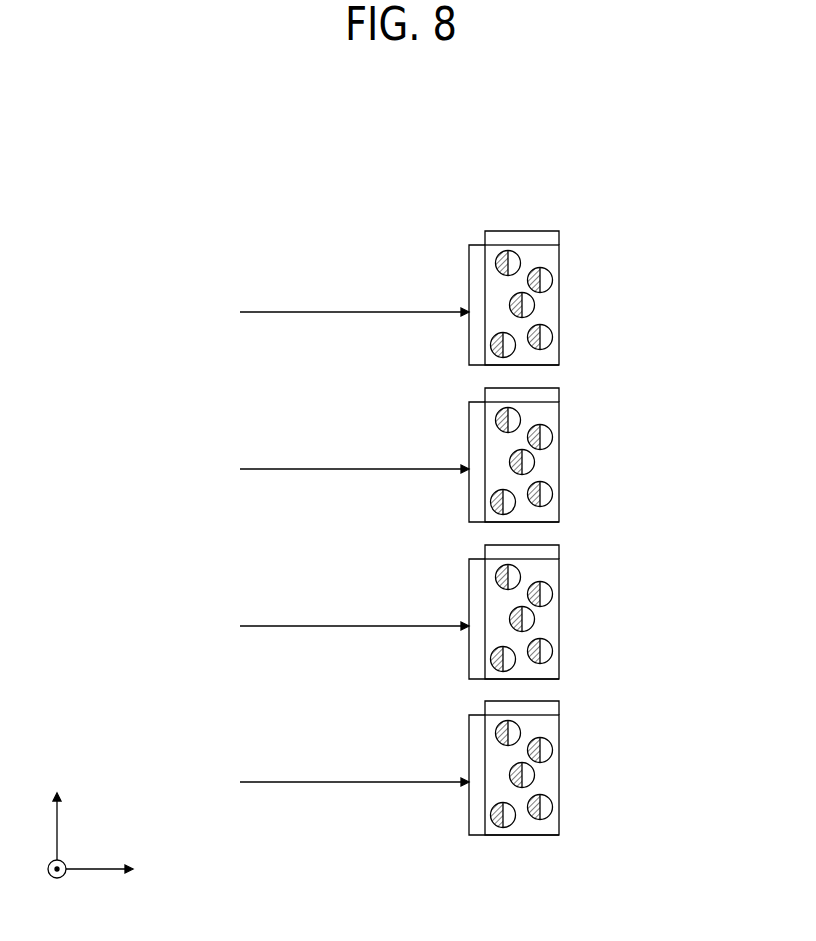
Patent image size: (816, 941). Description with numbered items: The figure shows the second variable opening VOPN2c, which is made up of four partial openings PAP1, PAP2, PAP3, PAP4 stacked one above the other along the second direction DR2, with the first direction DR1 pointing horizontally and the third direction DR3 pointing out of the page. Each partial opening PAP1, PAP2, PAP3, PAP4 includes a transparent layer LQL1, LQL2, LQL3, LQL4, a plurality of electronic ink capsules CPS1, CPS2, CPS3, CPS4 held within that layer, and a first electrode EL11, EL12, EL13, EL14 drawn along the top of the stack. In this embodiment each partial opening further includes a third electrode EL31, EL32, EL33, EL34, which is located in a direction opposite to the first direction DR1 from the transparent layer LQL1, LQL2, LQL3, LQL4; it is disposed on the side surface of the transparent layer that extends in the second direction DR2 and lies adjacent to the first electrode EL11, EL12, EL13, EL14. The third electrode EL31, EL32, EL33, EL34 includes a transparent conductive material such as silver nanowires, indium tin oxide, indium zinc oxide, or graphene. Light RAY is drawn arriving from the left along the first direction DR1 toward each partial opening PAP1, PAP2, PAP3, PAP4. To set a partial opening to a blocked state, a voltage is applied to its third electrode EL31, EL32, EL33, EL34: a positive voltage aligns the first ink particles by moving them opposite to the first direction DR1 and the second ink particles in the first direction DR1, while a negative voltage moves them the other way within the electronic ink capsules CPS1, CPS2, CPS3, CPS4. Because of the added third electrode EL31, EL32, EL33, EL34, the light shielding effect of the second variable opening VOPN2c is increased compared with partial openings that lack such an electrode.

The second variable opening VOPN2c is at (569, 165).
The partial opening PAP1 is at (643, 230).
The partial opening PAP2 is at (584, 454).
The partial opening PAP3 is at (584, 611).
The partial opening PAP4 is at (584, 767).
The first electrode EL11 is at (557, 238).
The first electrode EL12 is at (559, 399).
The first electrode EL13 is at (559, 556).
The first electrode EL14 is at (559, 712).
The third electrode EL31 is at (477, 325).
The third electrode EL32 is at (551, 462).
The third electrode EL33 is at (551, 619).
The third electrode EL34 is at (551, 775).
The electronic ink capsules CPS1 is at (557, 273).
The electronic ink capsules CPS2 is at (563, 461).
The electronic ink capsules CPS3 is at (563, 618).
The electronic ink capsules CPS4 is at (563, 774).
The transparent layer LQL1 is at (553, 307).
The transparent layer LQL2 is at (559, 462).
The transparent layer LQL3 is at (559, 619).
The transparent layer LQL4 is at (559, 775).
The light ray RAY is at (310, 547).
The first direction DR1 is at (119, 869).
The second direction DR2 is at (57, 814).
The third direction DR3 is at (57, 886).